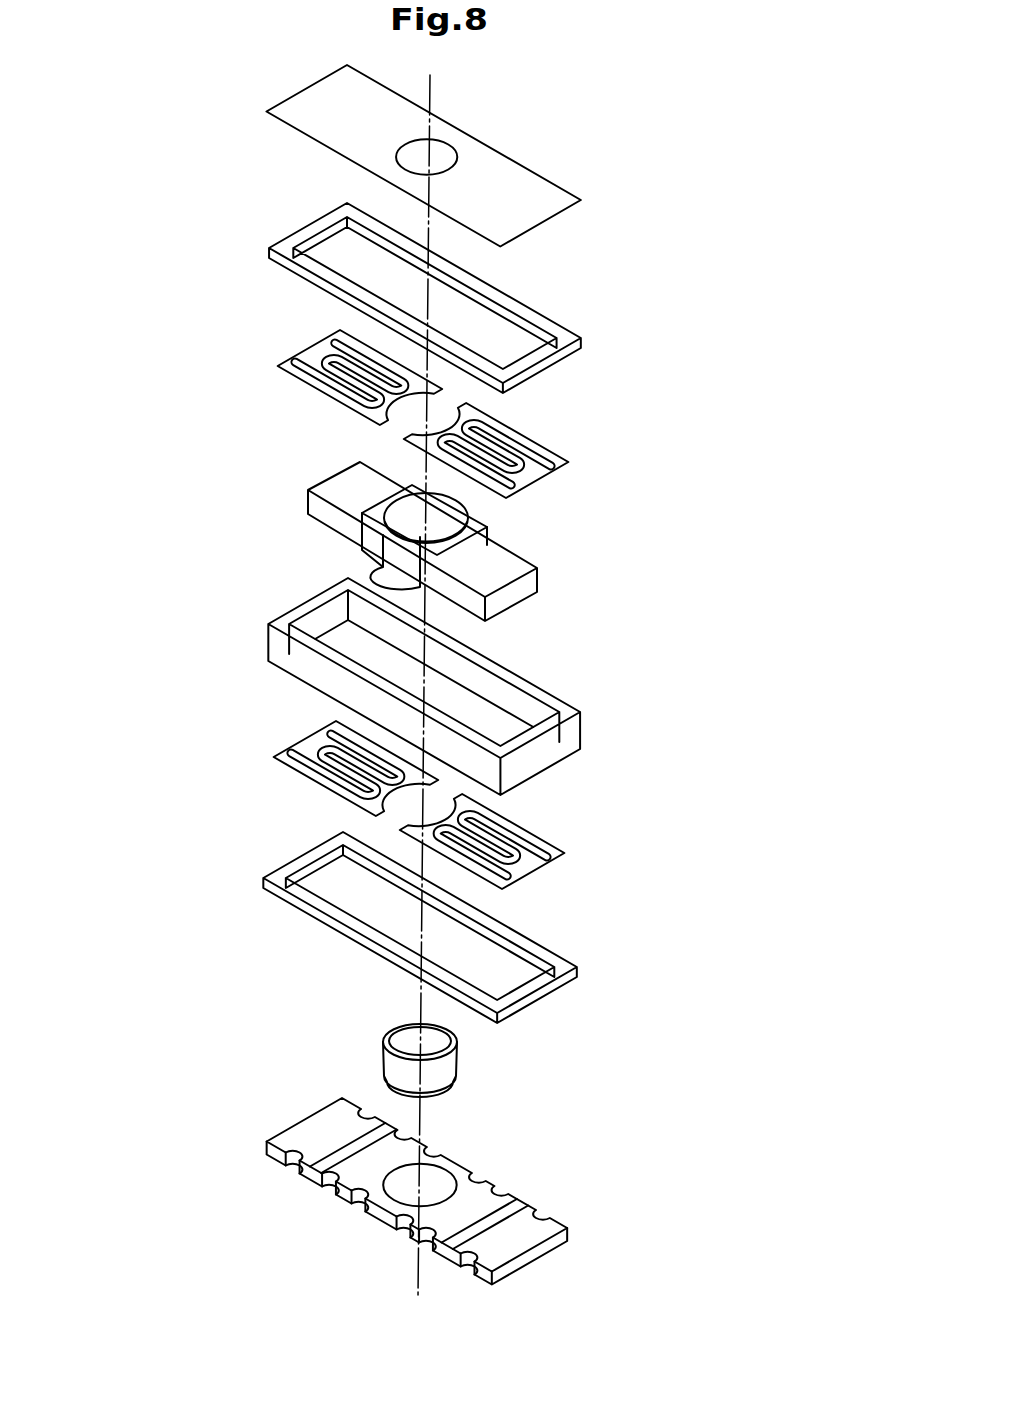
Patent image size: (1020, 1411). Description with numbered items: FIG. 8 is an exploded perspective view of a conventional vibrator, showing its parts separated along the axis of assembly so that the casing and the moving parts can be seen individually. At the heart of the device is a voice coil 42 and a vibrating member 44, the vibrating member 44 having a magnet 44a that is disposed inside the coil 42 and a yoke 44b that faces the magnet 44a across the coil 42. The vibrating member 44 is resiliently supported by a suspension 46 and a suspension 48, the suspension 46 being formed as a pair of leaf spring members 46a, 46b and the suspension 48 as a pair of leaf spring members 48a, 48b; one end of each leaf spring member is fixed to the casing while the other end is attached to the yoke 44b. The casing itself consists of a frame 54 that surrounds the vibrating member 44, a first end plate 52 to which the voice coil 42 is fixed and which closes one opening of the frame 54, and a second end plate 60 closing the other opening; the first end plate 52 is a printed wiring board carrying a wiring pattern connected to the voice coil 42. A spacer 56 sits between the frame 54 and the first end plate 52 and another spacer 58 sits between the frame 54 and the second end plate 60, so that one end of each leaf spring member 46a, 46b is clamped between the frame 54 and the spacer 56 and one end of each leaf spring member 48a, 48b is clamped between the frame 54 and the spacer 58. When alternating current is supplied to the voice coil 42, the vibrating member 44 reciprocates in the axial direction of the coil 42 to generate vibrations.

The voice coil 42 is at (383, 1042).
The vibrating member 44 is at (309, 519).
The magnet 44a is at (385, 562).
The yoke 44b is at (327, 525).
The suspension 46 is at (439, 805).
The leaf spring member 46a is at (303, 772).
The leaf spring member 46b is at (540, 841).
The suspension 48 is at (456, 379).
The leaf spring member 48a is at (313, 344).
The leaf spring member 48b is at (545, 455).
The first end plate 52 is at (500, 1198).
The frame 54 is at (517, 673).
The spacer 56 is at (555, 950).
The spacer 58 is at (540, 315).
The second end plate 60 is at (518, 162).